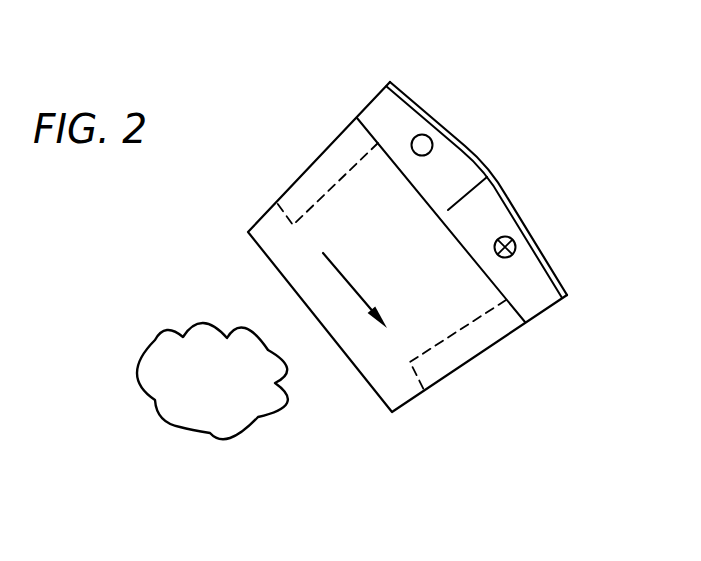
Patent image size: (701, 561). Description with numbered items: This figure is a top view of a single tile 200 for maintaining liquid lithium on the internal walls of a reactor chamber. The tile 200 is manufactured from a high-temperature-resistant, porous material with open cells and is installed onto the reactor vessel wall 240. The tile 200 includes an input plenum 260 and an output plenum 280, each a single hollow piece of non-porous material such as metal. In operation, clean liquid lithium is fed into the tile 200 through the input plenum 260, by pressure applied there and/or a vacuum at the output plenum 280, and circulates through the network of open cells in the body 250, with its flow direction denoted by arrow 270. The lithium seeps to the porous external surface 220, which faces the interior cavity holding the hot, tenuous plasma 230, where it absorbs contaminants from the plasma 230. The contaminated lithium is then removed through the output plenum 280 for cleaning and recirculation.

The tile 200 is at (480, 426).
The porous external surface 220 is at (274, 266).
The plasma 230 is at (230, 392).
The reactor vessel wall 240 is at (480, 160).
The body 250 is at (353, 217).
The input plenum 260 is at (423, 146).
The arrow 270 is at (355, 292).
The output plenum 280 is at (516, 247).